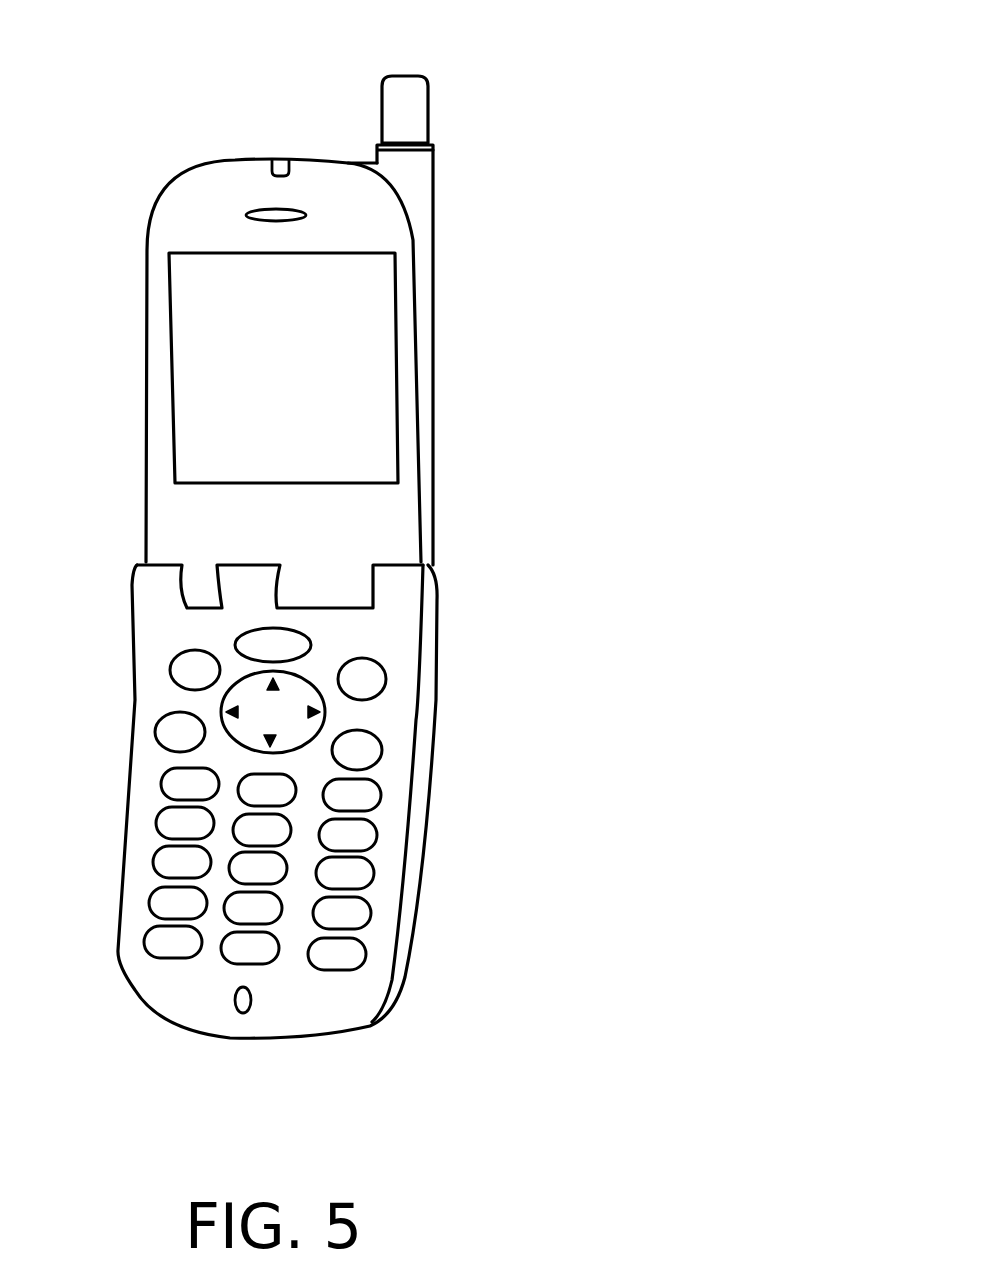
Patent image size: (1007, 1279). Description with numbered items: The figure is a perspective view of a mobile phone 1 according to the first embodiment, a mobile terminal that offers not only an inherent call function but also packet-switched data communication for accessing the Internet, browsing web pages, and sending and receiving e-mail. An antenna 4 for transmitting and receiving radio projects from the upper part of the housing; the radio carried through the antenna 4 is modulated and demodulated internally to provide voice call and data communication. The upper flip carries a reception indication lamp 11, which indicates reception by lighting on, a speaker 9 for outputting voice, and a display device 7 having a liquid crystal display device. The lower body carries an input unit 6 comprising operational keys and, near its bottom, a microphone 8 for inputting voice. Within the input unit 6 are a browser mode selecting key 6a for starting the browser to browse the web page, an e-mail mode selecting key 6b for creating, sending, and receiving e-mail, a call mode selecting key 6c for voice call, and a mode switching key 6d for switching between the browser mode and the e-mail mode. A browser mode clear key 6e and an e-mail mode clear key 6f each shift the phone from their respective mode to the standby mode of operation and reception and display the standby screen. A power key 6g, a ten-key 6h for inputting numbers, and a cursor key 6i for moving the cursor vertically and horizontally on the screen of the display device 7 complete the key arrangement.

The mobile phone 1 is at (618, 100).
The antenna 4 is at (410, 77).
The input unit 6 is at (382, 733).
The browser mode selecting key 6a is at (187, 670).
The e-mail mode selecting key 6b is at (383, 662).
The call mode selecting key 6c is at (175, 783).
The mode switching key 6d is at (313, 637).
The browser mode clear key 6e is at (177, 737).
The e-mail mode clear key 6f is at (362, 755).
The power key 6g is at (373, 807).
The ten-key 6h is at (365, 897).
The cursor key 6i is at (327, 717).
The display device 7 is at (372, 393).
The microphone 8 is at (238, 1013).
The speaker 9 is at (255, 210).
The reception indication lamp 11 is at (279, 160).